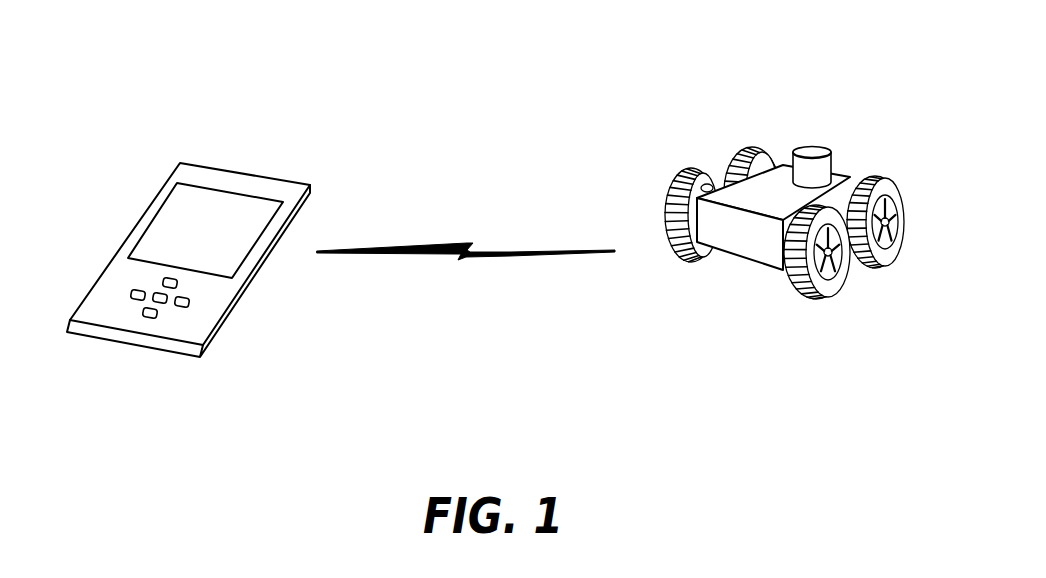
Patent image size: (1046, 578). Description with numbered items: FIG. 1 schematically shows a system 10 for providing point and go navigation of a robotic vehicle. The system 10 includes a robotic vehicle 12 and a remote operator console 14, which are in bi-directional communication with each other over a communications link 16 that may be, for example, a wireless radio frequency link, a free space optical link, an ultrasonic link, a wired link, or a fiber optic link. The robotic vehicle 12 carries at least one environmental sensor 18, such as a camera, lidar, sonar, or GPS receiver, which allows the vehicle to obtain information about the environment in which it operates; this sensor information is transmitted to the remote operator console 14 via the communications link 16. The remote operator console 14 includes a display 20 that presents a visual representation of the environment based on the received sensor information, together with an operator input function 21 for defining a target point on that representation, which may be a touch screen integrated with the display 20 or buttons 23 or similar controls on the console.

The system 10 is at (139, 56).
The robotic vehicle 12 is at (784, 222).
The remote operator console 14 is at (172, 261).
The communications link 16 is at (505, 257).
The environmental sensor 18 is at (797, 149).
The display 20 is at (190, 200).
The operator input function 21 is at (279, 148).
The buttons 23 is at (187, 305).